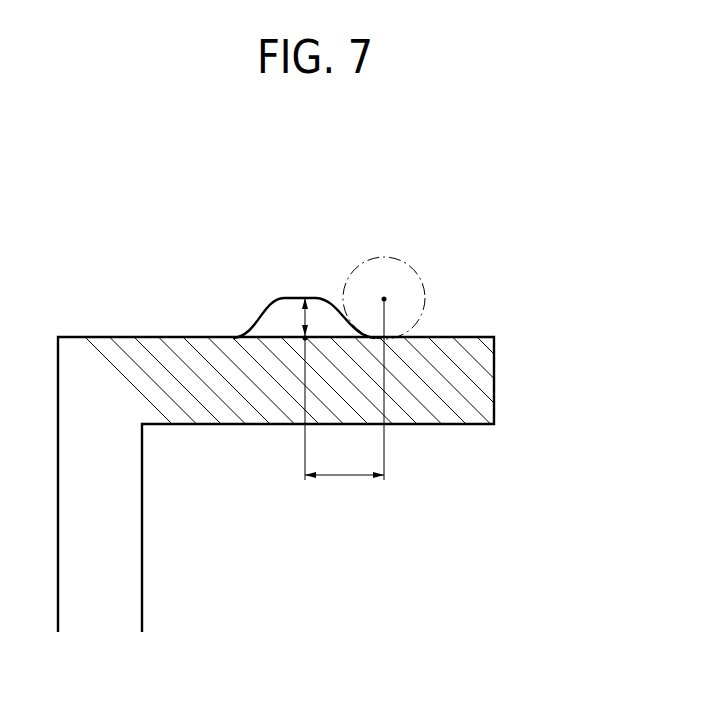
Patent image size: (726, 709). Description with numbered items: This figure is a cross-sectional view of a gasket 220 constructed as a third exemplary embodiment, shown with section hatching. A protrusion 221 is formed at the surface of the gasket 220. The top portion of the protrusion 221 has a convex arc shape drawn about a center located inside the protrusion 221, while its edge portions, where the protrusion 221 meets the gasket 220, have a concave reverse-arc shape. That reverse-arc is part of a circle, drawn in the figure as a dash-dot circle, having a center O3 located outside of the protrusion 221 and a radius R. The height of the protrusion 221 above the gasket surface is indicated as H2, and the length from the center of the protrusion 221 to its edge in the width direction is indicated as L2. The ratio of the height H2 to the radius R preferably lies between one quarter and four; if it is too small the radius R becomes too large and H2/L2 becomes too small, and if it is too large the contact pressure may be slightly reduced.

The gasket 220 is at (513, 336).
The protrusion 221 is at (282, 298).
The height of the protrusion H2 is at (307, 318).
The center of the reverse-arc O3 is at (385, 376).
The radius of the reverse-arc R is at (387, 318).
The length from a center to an edge in a width direction L2 is at (344, 488).